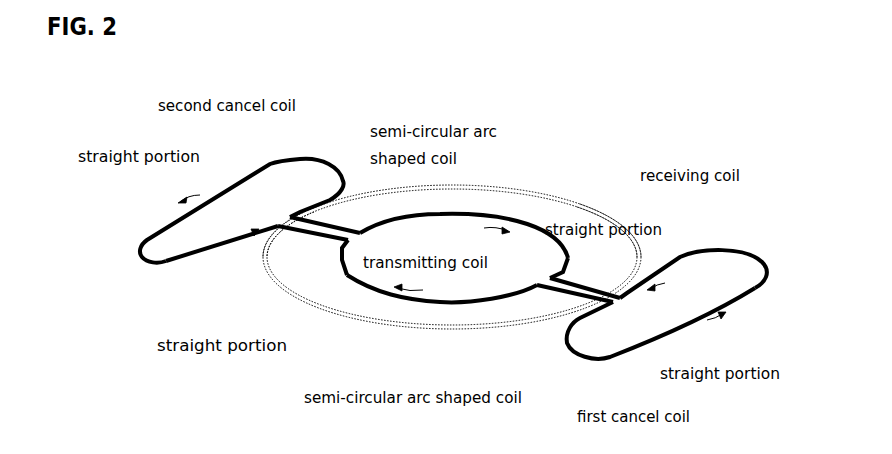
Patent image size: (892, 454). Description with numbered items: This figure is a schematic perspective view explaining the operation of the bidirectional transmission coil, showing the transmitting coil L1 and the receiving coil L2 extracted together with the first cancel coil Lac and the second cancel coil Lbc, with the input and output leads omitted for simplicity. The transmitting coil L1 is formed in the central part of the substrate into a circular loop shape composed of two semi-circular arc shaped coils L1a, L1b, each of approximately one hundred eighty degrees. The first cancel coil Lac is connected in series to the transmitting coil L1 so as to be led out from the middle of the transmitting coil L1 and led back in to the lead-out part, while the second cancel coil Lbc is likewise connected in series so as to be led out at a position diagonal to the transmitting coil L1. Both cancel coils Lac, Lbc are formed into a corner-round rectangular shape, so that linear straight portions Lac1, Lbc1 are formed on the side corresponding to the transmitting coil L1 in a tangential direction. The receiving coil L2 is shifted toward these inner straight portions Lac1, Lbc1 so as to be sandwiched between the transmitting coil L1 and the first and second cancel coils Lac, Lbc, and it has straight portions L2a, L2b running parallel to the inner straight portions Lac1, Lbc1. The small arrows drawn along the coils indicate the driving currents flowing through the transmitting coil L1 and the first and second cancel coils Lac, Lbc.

The second cancel coil Lbc is at (242, 191).
The straight portion Lbc1 is at (303, 202).
The transmitting coil L1 is at (455, 264).
The semi-circular arc shaped coil L1a is at (439, 216).
The semi-circular arc shaped coil L1b is at (470, 302).
The receiving coil L2 is at (452, 260).
The straight portion L2a is at (622, 282).
The straight portion L2b is at (280, 237).
The first cancel coil Lac is at (667, 328).
The straight portion Lac1 is at (600, 313).